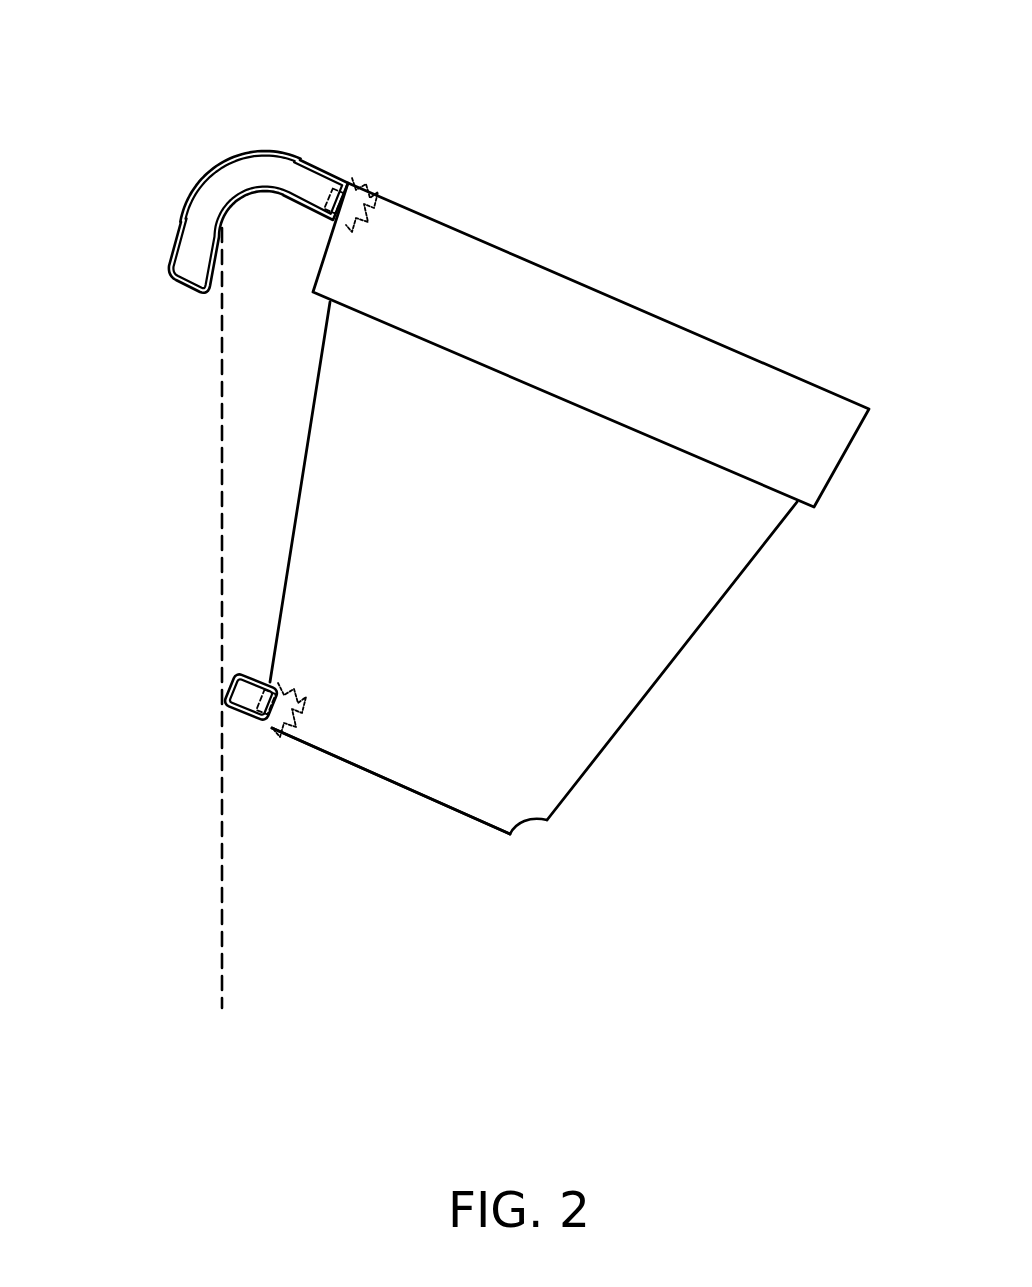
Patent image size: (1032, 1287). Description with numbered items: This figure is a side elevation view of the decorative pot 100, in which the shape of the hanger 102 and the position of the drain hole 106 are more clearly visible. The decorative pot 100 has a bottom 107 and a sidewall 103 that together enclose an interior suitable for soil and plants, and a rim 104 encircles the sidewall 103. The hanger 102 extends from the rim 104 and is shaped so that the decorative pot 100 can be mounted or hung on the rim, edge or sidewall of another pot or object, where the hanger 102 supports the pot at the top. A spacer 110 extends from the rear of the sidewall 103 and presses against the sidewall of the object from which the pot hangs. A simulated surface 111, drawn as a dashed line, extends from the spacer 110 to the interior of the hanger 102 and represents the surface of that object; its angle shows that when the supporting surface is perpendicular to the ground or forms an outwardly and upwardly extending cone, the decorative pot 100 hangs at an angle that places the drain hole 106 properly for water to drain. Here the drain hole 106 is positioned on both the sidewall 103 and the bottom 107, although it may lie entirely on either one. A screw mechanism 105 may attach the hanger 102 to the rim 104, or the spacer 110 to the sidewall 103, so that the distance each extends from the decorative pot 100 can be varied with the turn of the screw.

The decorative pot 100 is at (720, 122).
The hanger 102 is at (187, 190).
The sidewall 103 is at (703, 552).
The rim 104 is at (440, 260).
The screw mechanism 105 is at (360, 182).
The drain hole 106 is at (533, 825).
The bottom 107 is at (413, 793).
The spacer 110 is at (248, 717).
The simulated surface 111 is at (220, 535).